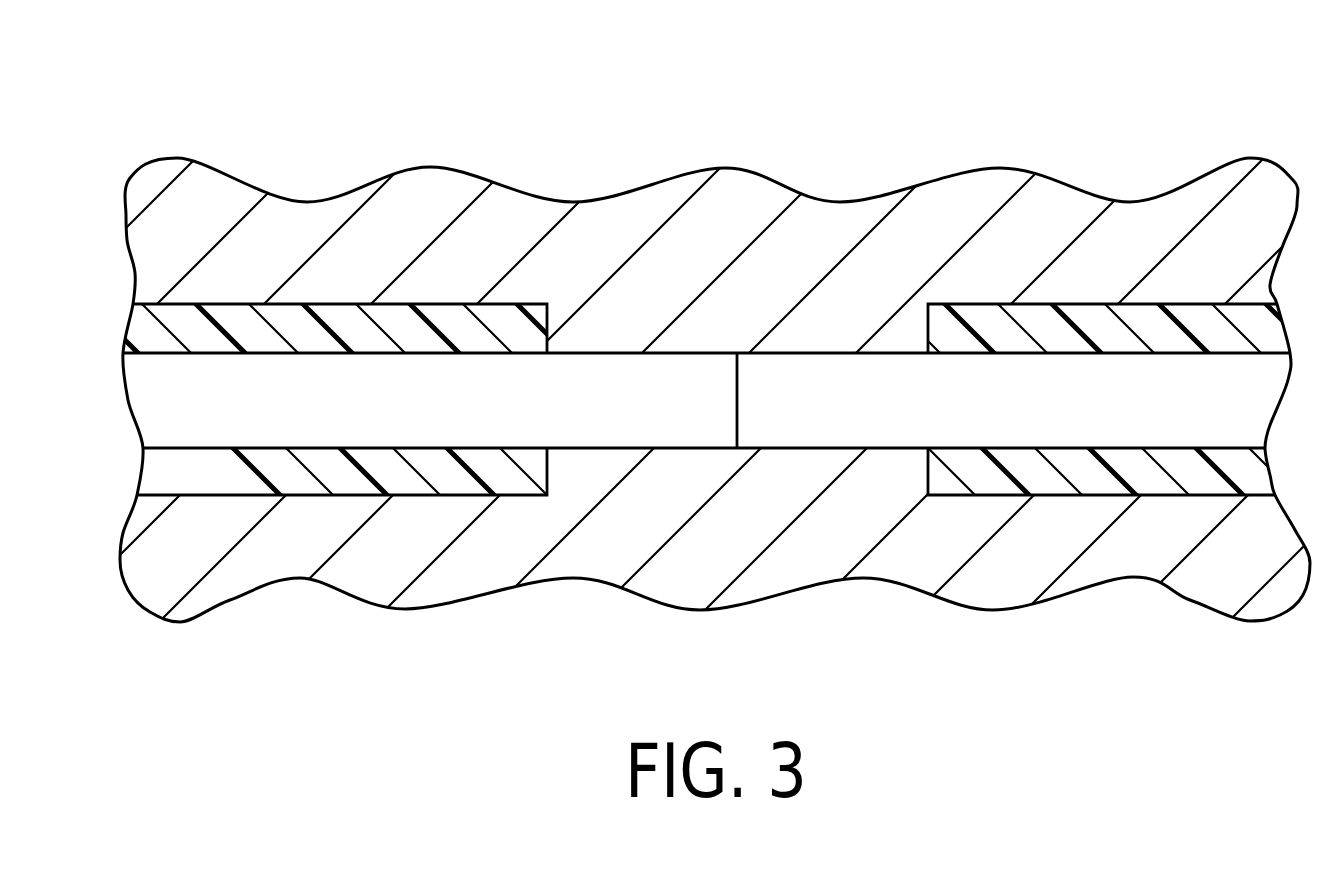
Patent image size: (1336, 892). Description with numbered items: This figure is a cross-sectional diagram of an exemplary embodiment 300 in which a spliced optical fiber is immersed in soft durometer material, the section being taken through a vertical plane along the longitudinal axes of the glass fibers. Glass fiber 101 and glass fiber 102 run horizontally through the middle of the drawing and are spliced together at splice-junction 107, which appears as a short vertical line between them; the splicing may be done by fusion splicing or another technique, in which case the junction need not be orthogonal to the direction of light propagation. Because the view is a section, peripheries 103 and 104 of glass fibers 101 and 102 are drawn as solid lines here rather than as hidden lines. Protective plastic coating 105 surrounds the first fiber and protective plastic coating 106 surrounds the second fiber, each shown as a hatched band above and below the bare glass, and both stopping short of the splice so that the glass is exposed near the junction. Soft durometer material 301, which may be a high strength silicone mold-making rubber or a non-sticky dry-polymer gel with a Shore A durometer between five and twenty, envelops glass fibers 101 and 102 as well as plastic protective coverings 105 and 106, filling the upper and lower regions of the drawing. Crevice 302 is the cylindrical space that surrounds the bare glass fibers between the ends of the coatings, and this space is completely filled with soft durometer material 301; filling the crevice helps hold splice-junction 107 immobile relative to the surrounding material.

The exemplary embodiment 300 is at (740, 140).
The soft durometer material 301 is at (453, 593).
The crevice 302 is at (608, 312).
The optical fiber 101 is at (610, 422).
The optical fiber 102 is at (807, 430).
The periphery of glass fiber 103 is at (262, 448).
The periphery of glass fiber 104 is at (990, 448).
The protective plastic coating 105 is at (407, 493).
The protective plastic coating 106 is at (1118, 493).
The splice-junction 107 is at (740, 385).